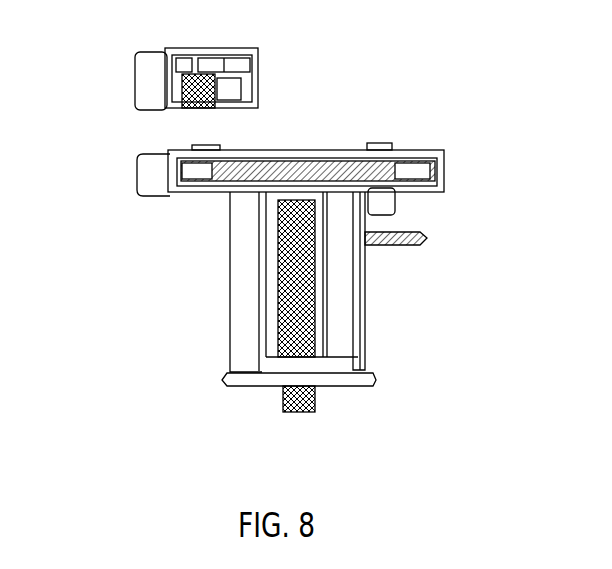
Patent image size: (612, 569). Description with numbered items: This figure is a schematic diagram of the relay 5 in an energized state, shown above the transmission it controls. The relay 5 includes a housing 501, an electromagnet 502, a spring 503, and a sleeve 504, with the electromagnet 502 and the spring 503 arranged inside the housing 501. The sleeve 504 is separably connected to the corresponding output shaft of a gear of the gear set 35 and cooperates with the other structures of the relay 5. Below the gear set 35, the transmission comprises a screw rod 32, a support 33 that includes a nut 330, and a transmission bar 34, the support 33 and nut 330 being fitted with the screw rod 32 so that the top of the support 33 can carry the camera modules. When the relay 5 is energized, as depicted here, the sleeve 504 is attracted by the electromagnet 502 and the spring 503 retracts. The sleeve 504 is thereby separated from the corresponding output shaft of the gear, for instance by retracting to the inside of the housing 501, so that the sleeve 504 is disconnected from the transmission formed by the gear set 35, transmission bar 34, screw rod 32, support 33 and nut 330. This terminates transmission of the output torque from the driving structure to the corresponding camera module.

The relay 5 is at (150, 50).
The housing 501 is at (153, 85).
The electromagnet 502 is at (207, 63).
The spring 503 is at (250, 87).
The sleeve 504 is at (203, 107).
The gear set 35 is at (186, 195).
The transmission bar 34 is at (380, 200).
The screw rod 32 is at (305, 299).
The support 33 is at (253, 328).
The nut 330 is at (328, 372).